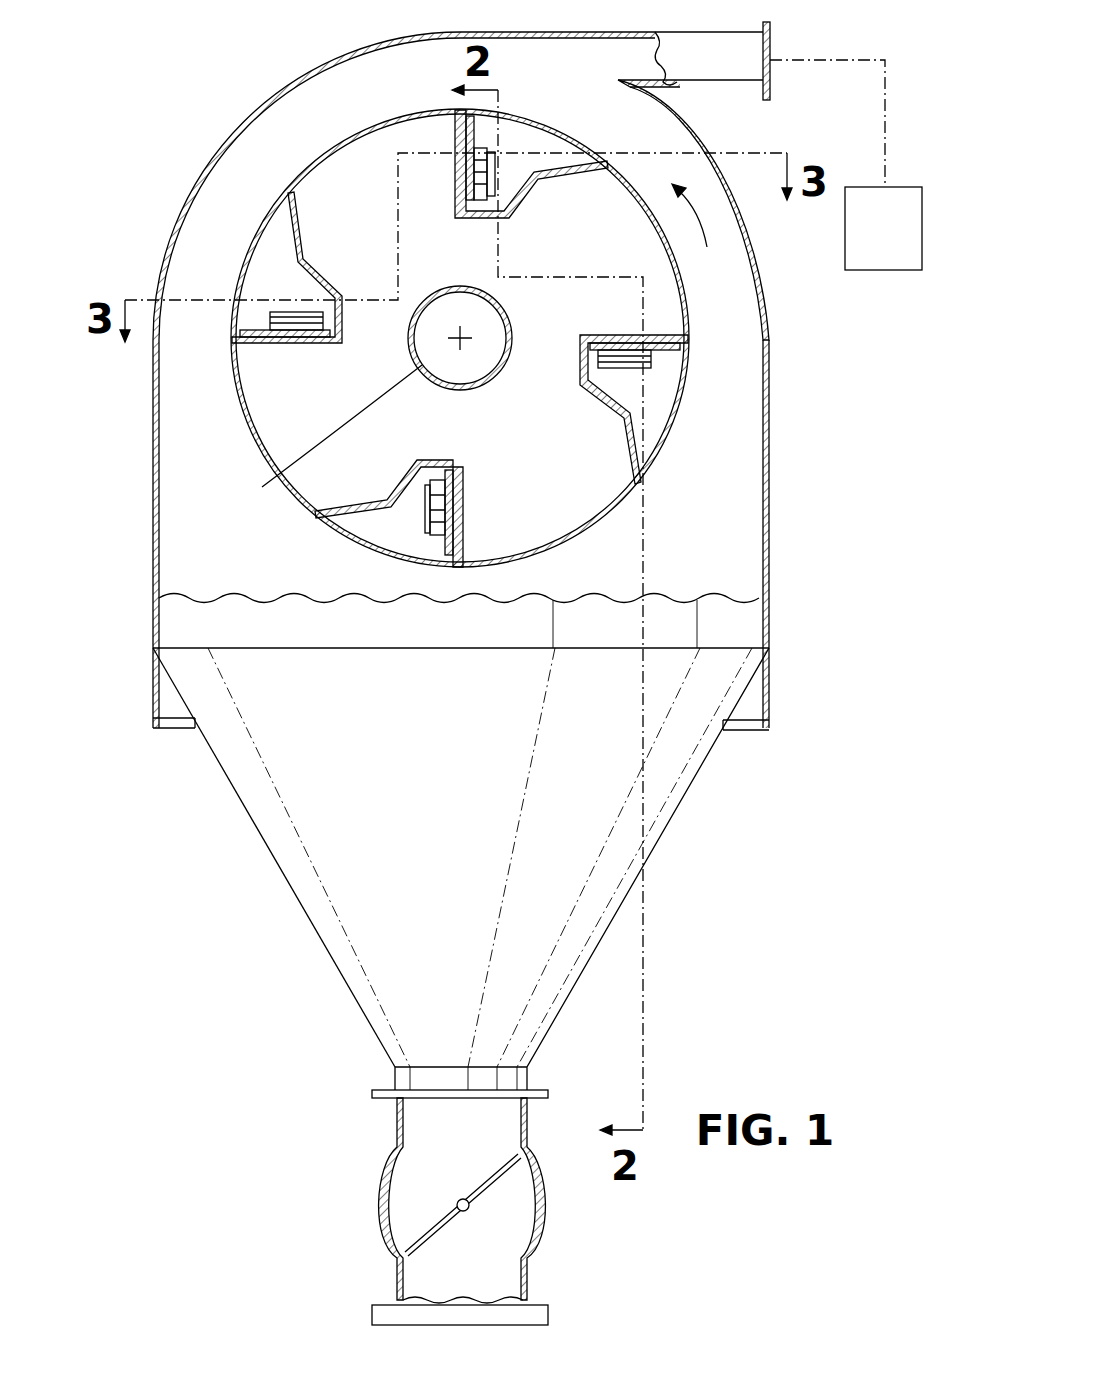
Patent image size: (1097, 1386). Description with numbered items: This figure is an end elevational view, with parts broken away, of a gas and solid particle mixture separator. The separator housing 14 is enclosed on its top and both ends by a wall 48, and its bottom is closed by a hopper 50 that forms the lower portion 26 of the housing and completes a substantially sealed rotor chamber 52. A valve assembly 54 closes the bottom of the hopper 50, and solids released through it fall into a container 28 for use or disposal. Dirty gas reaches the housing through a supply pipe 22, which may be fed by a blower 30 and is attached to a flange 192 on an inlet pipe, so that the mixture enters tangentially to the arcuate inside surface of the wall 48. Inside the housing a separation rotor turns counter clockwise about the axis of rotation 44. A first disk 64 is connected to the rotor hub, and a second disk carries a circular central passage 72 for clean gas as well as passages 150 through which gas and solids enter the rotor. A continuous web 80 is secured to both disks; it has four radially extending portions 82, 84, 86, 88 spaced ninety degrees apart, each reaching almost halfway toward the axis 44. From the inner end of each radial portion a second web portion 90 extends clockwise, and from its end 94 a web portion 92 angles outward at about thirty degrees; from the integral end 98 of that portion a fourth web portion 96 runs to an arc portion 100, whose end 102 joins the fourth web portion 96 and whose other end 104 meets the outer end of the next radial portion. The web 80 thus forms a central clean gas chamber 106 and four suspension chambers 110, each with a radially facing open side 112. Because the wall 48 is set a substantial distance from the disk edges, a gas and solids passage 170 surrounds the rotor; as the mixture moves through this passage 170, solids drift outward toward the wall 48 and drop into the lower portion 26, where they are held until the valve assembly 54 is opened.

The separator housing 14 is at (780, 520).
The supply pipe 22 is at (842, 60).
The lower portion 26 is at (345, 990).
The container 28 is at (372, 1315).
The blower 30 is at (920, 187).
The axis of rotation 44 is at (468, 338).
The wall 48 is at (303, 72).
The hopper 50 is at (225, 777).
The rotor chamber 52 is at (170, 520).
The valve assembly 54 is at (366, 1178).
The first disk 64 is at (693, 360).
The circular central passage 72 is at (268, 484).
The web 80 is at (613, 497).
The radially extending portion 82 is at (460, 200).
The radially extending portion 84 is at (683, 333).
The radially extending portion 86 is at (467, 555).
The radially extending portion 88 is at (330, 343).
The second web portion 90 is at (432, 460).
The web portion 92 is at (393, 485).
The end 94 is at (415, 462).
The fourth web portion 96 is at (363, 507).
The integral end 98 is at (385, 510).
The arc portion 100 is at (245, 432).
The end 102 is at (298, 203).
The end 104 is at (450, 120).
The clean gas chamber 106 is at (265, 408).
The suspension chamber 110 is at (700, 382).
The radially facing open side 112 is at (663, 425).
The passage 150 is at (728, 33).
The gas and solids passage 170 is at (240, 163).
The flange 192 is at (772, 85).